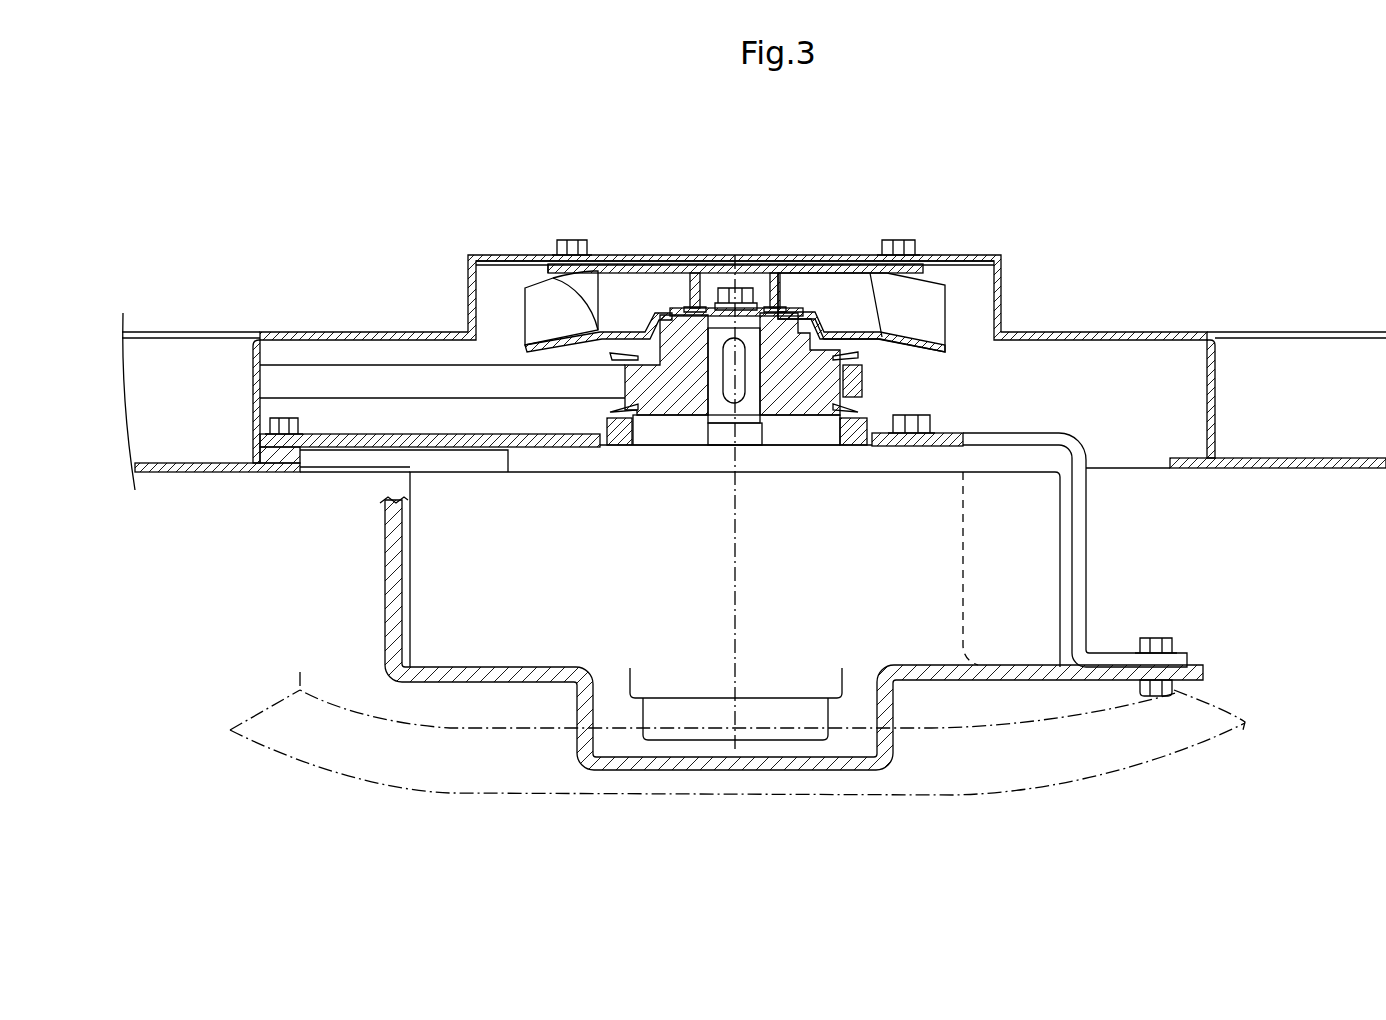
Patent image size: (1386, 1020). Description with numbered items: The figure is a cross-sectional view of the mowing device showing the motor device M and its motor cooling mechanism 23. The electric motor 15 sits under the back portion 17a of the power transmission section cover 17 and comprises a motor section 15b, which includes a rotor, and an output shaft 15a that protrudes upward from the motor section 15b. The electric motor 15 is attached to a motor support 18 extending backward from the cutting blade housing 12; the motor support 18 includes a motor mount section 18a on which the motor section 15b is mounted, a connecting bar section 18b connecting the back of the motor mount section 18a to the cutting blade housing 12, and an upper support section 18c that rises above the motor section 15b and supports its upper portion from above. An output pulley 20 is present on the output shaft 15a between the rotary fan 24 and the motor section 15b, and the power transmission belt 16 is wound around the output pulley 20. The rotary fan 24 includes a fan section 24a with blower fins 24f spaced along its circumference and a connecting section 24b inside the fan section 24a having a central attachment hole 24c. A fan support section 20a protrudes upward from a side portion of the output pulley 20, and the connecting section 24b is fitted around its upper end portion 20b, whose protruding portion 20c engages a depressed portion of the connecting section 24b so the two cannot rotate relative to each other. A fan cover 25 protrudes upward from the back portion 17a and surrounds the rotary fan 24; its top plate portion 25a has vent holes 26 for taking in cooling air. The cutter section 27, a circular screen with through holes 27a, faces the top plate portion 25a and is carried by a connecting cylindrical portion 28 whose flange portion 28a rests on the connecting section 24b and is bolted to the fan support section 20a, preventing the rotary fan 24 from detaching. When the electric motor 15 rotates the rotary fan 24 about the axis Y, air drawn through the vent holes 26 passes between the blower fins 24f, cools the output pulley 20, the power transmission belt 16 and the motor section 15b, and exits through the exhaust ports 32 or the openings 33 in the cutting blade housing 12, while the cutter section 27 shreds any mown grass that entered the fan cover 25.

The cutting blade housing 12 is at (212, 462).
The electric motor 15 is at (1075, 559).
The output shaft 15a is at (762, 433).
The motor section 15b is at (992, 580).
The power transmission belt 16 is at (590, 380).
The power transmission section cover 17 is at (186, 332).
The back portion 17a is at (1179, 331).
The motor support 18 is at (802, 818).
The motor mount section 18a is at (587, 707).
The connecting bar section 18b is at (913, 796).
The upper support section 18c is at (383, 568).
The output pulley 20 is at (864, 378).
The fan support section 20a is at (552, 280).
The upper end portion 20b is at (652, 320).
The protruding portion 20c is at (787, 313).
The motor cooling mechanism 23 is at (1215, 491).
The rotary fan 24 is at (950, 311).
The fan section 24a is at (948, 300).
The connecting section 24b is at (841, 330).
The attachment hole 24c is at (780, 300).
The blower fins 24f is at (547, 312).
The fan cover 25 is at (955, 250).
The top plate portion 25a is at (618, 262).
The vent holes 26 is at (770, 262).
The cutter section 27 is at (858, 316).
The through holes 27a is at (664, 262).
The connecting cylindrical portion 28 is at (748, 262).
The flange portion 28a is at (685, 262).
The exhaust ports 32 is at (255, 427).
The openings 33 is at (302, 464).
The motor device M is at (1110, 175).
The axis Y is at (735, 255).